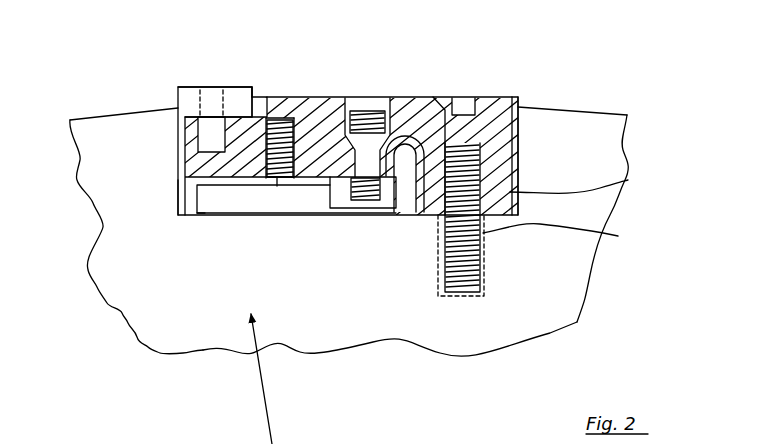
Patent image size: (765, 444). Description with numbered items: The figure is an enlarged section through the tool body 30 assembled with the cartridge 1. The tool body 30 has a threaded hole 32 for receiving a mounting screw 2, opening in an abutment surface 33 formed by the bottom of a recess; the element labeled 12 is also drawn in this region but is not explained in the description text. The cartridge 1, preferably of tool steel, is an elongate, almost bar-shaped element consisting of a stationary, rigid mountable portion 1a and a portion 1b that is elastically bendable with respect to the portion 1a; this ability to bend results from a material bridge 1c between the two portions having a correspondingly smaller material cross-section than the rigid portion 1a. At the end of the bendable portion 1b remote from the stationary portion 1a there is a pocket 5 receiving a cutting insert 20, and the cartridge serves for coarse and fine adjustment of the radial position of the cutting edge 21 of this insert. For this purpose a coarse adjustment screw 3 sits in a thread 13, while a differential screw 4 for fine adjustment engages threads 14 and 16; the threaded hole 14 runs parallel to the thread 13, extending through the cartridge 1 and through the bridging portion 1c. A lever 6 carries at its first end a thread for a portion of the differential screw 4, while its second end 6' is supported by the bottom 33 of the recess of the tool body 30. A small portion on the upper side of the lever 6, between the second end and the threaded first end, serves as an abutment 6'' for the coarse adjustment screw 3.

The cartridge 1 is at (407, 96).
The stationary mountable portion 1a is at (498, 178).
The elastically bendable portion 1b is at (178, 182).
The material bridge 1c is at (392, 98).
The mounting screw 2 is at (505, 100).
The coarse adjustment screw 3 is at (303, 100).
The differential screw 4 is at (349, 155).
The pocket 5 is at (254, 97).
The lever 6 is at (263, 291).
The second end of the lever 6' is at (142, 287).
The abutment 6'' is at (242, 287).
The mounting surface 12 is at (520, 178).
The thread 13 is at (266, 99).
The threaded hole 14 is at (401, 190).
The thread 16 is at (333, 200).
The cutting insert 20 is at (178, 98).
The cutting edge 21 is at (177, 84).
The tool body 30 is at (540, 267).
The threaded hole 32 is at (567, 233).
The abutment surface 33 is at (628, 180).